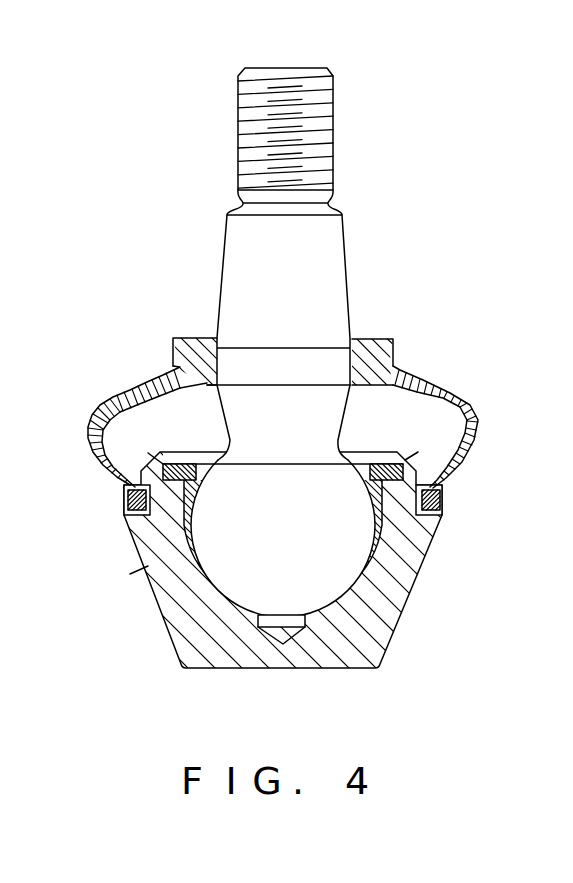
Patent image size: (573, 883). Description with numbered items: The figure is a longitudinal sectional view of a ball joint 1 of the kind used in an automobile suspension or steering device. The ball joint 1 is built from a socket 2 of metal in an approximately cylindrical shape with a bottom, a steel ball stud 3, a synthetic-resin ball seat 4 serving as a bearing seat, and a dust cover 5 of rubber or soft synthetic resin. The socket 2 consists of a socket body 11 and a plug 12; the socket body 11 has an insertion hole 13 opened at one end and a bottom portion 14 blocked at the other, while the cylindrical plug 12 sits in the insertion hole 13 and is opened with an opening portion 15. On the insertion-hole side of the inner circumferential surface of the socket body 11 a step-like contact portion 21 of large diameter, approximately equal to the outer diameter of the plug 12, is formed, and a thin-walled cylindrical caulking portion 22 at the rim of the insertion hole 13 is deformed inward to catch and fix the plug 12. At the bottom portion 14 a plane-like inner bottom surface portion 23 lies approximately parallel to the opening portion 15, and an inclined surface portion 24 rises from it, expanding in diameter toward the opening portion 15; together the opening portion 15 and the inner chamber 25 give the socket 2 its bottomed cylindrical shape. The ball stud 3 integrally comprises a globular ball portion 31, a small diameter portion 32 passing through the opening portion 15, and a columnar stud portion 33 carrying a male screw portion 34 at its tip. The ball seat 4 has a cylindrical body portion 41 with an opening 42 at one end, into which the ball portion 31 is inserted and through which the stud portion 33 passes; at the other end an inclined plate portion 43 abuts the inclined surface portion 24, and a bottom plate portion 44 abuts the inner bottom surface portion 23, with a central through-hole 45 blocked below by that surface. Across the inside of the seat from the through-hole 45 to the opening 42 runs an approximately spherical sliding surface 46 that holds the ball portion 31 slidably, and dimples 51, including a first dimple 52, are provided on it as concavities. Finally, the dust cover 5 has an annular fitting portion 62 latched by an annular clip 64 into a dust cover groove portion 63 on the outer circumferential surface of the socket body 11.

The ball joint 1 is at (284, 355).
The socket 2 is at (283, 574).
The ball stud 3 is at (282, 389).
The ball seat 4 is at (328, 594).
The dust cover 5 is at (292, 412).
The socket body 11 is at (124, 573).
The plug 12 is at (141, 450).
The insertion hole 13 is at (196, 462).
The bottom portion 14 is at (278, 645).
The opening portion 15 is at (370, 462).
The contact portion 21 is at (136, 482).
The caulking portion 22 is at (424, 450).
The inner bottom surface portion 23 is at (315, 628).
The inclined surface portion 24 is at (195, 618).
The inner chamber 25 is at (232, 622).
The ball portion 31 is at (332, 612).
The small diameter portion 32 is at (238, 385).
The stud portion 33 is at (337, 303).
The male screw portion 34 is at (333, 141).
The body portion 41 is at (427, 533).
The opening 42 is at (197, 480).
The inclined plate portion 43 is at (170, 590).
The bottom plate portion 44 is at (248, 622).
The through-hole 45 is at (283, 615).
The sliding surface 46 is at (390, 622).
The dimple 51 is at (210, 572).
The first dimple 52 is at (307, 600).
The fitting portion 62 is at (128, 508).
The dust cover groove portion 63 is at (452, 466).
The clip 64 is at (447, 508).